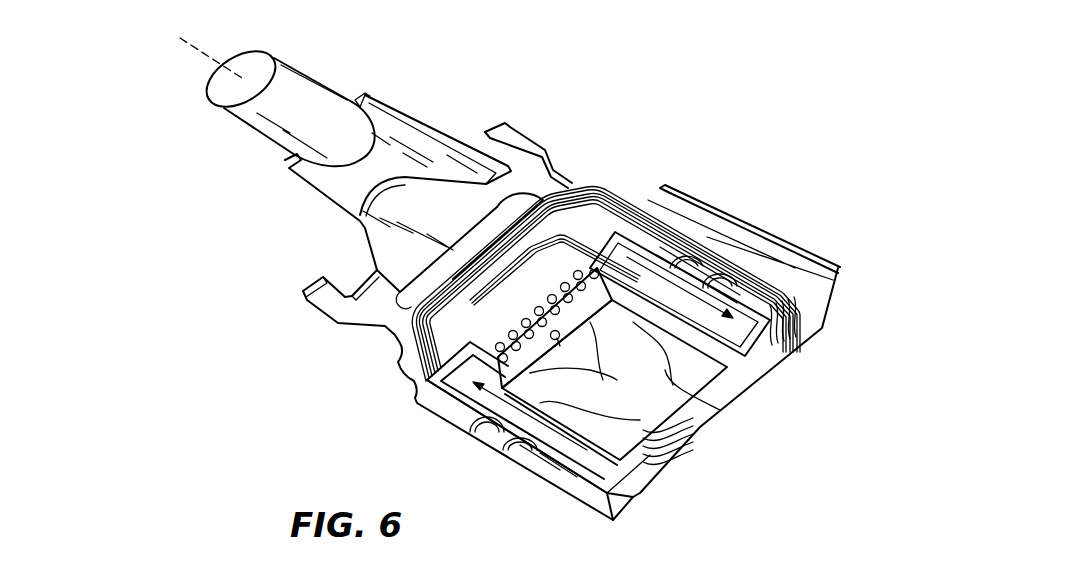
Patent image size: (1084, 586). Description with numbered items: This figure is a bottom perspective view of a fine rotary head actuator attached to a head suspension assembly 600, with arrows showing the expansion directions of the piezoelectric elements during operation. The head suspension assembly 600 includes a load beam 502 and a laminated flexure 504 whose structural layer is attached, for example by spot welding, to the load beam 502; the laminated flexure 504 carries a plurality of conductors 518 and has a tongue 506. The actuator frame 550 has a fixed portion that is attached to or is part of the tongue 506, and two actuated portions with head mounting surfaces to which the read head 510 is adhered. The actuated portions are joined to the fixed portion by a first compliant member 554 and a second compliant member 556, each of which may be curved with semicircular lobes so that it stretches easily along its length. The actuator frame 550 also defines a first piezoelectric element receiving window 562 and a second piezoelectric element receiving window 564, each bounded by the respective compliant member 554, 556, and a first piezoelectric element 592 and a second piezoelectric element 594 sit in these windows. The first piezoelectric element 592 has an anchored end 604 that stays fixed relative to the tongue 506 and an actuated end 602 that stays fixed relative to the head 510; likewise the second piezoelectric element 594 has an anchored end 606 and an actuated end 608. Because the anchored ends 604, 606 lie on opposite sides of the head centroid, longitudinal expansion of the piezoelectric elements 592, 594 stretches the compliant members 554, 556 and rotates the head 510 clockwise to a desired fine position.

The head suspension assembly 600 is at (262, 347).
The load beam 502 is at (377, 118).
The laminated flexure 504 is at (511, 143).
The tongue 506 is at (537, 283).
The read head 510 is at (663, 397).
The conductors 518 is at (803, 340).
The actuator frame 550 is at (413, 378).
The first compliant member 554 is at (470, 420).
The second compliant member 556 is at (703, 242).
The first piezoelectric element receiving window 562 is at (535, 455).
The second piezoelectric element receiving window 564 is at (710, 243).
The first piezoelectric element 592 is at (505, 440).
The second piezoelectric element 594 is at (727, 262).
The actuated end 602 is at (440, 387).
The anchored end 604 is at (586, 458).
The anchored end 606 is at (620, 252).
The actuated end 608 is at (752, 305).